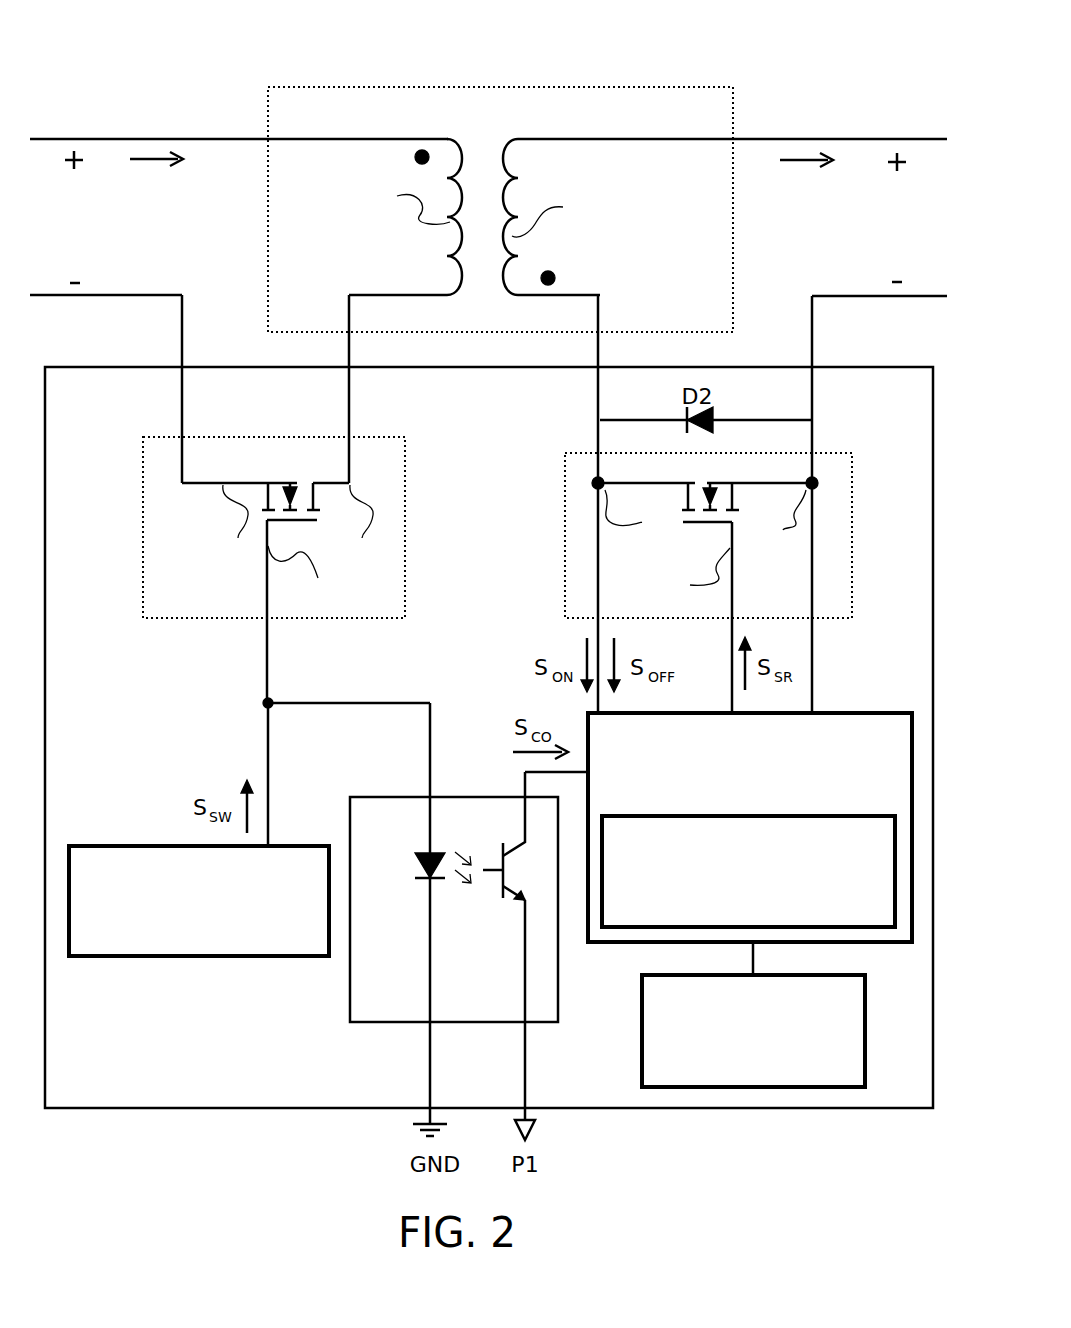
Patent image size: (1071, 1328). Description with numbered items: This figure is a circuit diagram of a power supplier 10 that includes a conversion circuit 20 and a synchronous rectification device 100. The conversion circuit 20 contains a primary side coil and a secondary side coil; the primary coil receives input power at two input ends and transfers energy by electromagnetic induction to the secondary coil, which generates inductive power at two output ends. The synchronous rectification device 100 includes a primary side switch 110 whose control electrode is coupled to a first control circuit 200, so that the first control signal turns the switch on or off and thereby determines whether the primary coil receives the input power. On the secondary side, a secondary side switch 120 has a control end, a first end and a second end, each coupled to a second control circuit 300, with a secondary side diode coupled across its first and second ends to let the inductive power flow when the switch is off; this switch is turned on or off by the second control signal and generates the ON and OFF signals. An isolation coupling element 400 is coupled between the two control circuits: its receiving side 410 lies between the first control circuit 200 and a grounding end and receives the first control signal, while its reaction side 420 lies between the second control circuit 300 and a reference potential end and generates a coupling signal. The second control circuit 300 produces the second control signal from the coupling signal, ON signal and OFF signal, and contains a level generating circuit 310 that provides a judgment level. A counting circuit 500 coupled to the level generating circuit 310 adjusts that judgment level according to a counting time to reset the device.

The power supplier 10 is at (115, 31).
The conversion circuit 20 is at (548, 87).
The synchronous rectification device 100 is at (192, 1108).
The primary side switch 110 is at (218, 618).
The secondary side switch 120 is at (565, 525).
The first control circuit 200 is at (178, 932).
The second control circuit 300 is at (729, 793).
The level generating circuit 310 is at (727, 901).
The isolation coupling element 400 is at (350, 1008).
The receiving side 410 is at (430, 933).
The reaction side 420 is at (525, 933).
The counting circuit 500 is at (732, 1062).